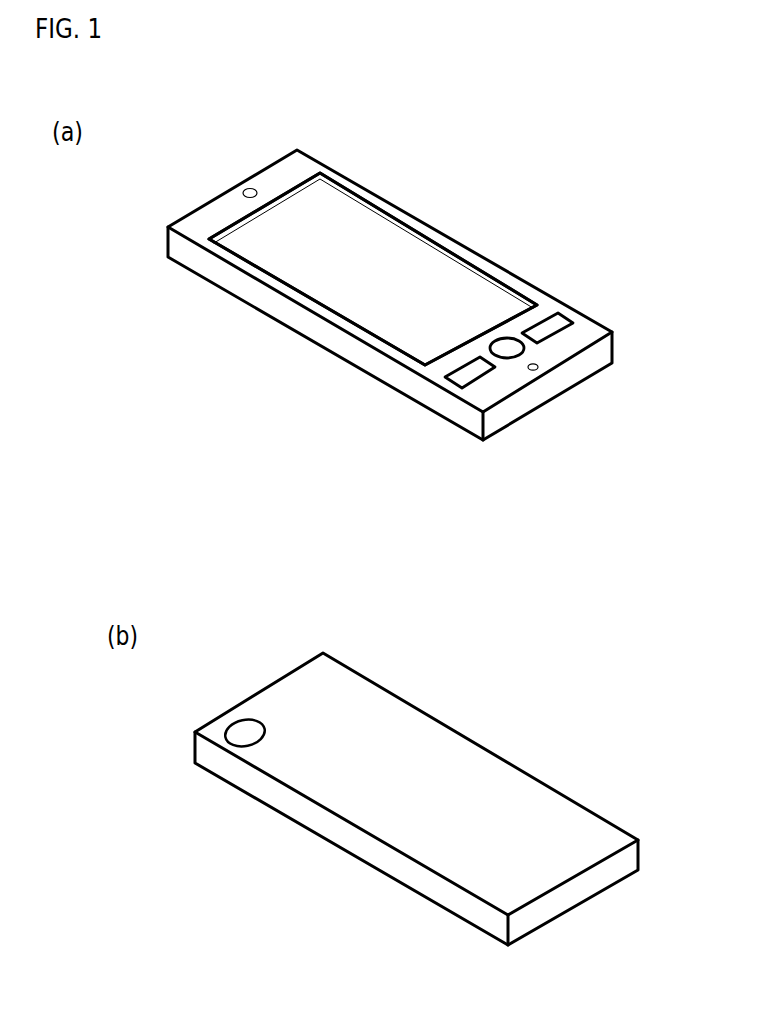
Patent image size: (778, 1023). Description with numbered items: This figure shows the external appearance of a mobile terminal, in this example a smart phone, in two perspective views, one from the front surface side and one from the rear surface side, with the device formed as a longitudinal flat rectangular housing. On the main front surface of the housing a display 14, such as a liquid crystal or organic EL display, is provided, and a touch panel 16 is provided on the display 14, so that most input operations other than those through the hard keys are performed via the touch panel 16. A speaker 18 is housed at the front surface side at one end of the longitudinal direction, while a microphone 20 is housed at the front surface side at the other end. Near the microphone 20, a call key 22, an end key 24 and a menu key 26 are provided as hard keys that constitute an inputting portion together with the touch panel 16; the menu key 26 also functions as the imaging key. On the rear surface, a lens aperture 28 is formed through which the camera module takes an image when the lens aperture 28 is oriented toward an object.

The display 14 is at (368, 222).
The touch panel 16 is at (433, 278).
The speaker 18 is at (243, 194).
The microphone 20 is at (538, 366).
The call key 22 is at (465, 378).
The end key 24 is at (555, 322).
The menu key 26 is at (509, 352).
The lens aperture 28 is at (243, 732).